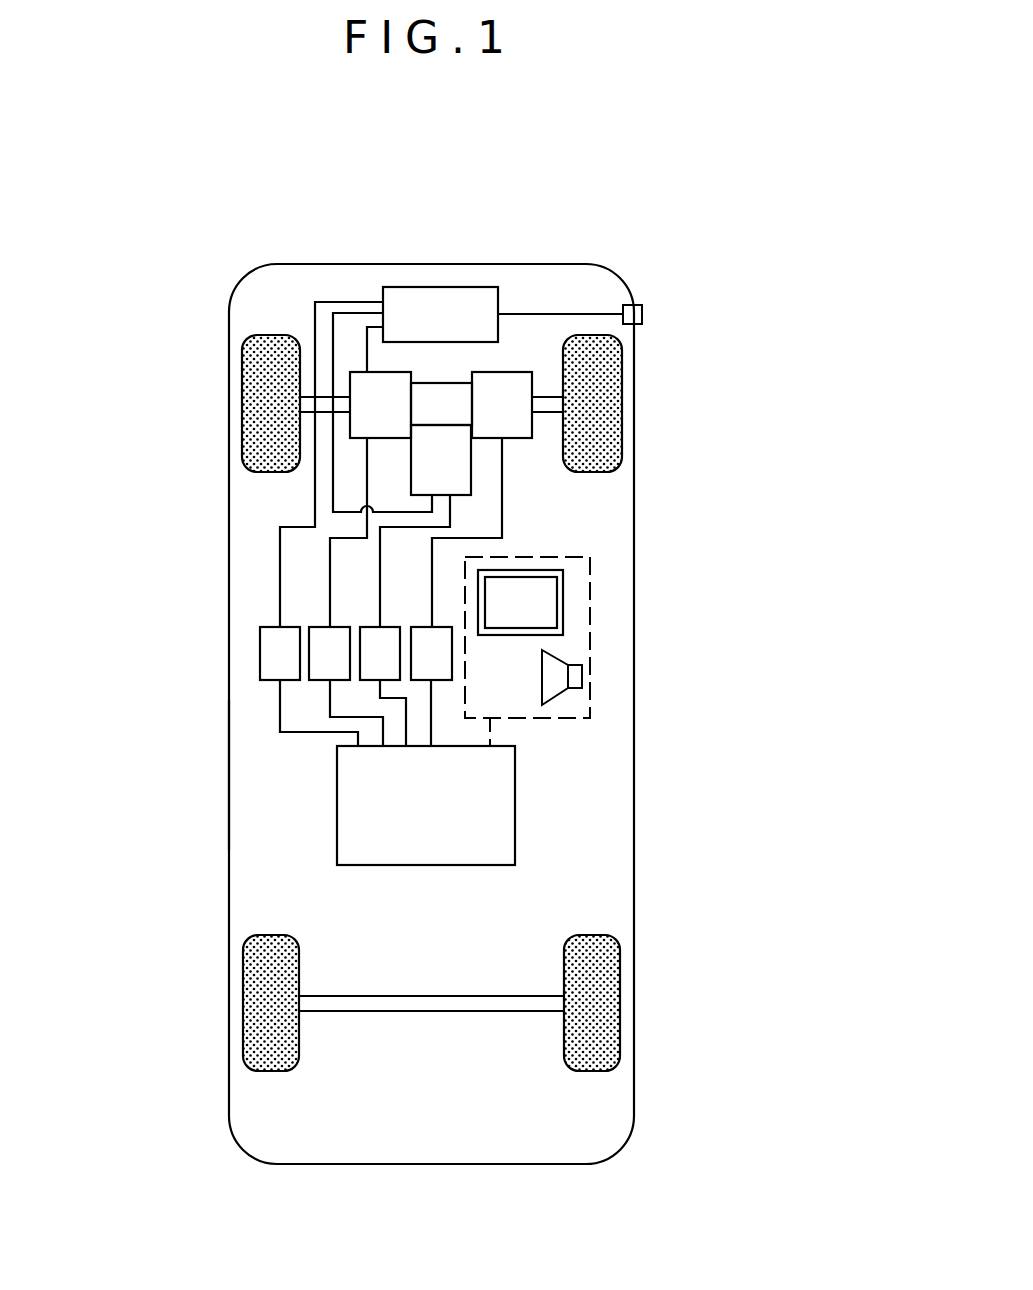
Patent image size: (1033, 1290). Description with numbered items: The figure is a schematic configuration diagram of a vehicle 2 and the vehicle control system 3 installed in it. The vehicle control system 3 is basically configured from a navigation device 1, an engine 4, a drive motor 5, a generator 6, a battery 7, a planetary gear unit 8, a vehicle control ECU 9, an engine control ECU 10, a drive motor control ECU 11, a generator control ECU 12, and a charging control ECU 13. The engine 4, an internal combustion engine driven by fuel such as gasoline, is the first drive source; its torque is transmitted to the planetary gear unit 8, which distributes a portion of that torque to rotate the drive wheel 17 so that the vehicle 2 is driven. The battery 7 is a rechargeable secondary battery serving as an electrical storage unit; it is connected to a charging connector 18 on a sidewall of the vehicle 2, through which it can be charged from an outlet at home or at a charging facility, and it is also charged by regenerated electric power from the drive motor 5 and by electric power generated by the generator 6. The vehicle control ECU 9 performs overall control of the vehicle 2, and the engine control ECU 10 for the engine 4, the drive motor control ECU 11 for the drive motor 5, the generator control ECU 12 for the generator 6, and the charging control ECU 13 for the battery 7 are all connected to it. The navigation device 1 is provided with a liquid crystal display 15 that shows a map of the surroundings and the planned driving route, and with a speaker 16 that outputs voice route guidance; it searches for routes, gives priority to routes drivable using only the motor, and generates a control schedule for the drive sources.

The navigation device 1 is at (592, 653).
The vehicle 2 is at (252, 773).
The vehicle control system 3 is at (270, 832).
The engine 4 is at (520, 430).
The drive motor 5 is at (460, 482).
The generator 6 is at (358, 427).
The battery 7 is at (467, 292).
The planetary gear unit 8 is at (455, 398).
The vehicle control ECU 9 is at (500, 812).
The engine control ECU 10 is at (425, 637).
The drive motor control ECU 11 is at (375, 638).
The generator control ECU 12 is at (323, 638).
The charging control ECU 13 is at (275, 675).
The liquid crystal display 15 is at (543, 593).
The speaker 16 is at (552, 690).
The drive wheel 17 is at (602, 398).
The charging connector 18 is at (642, 314).